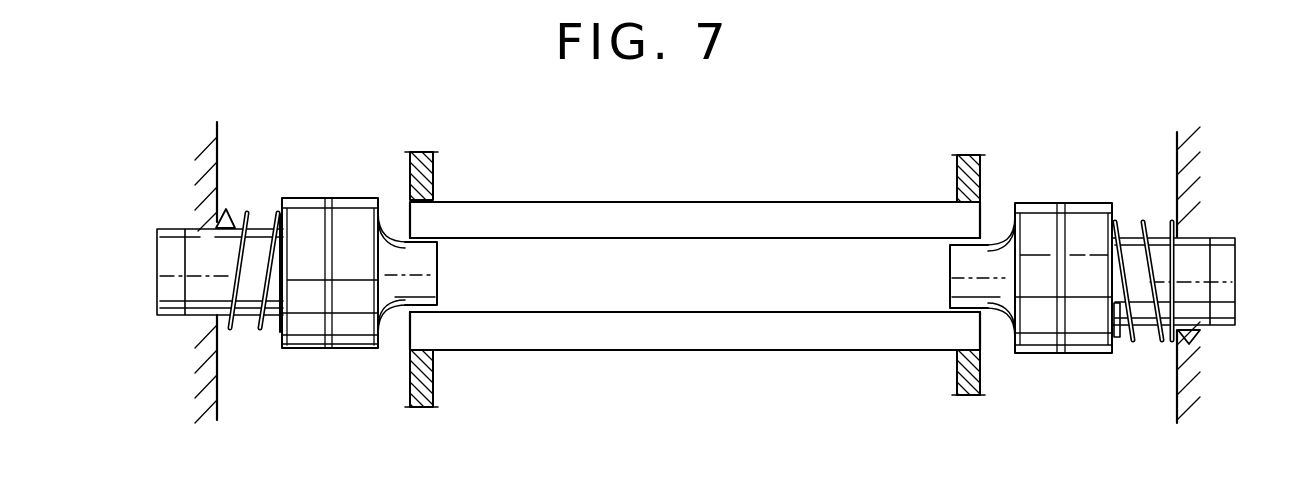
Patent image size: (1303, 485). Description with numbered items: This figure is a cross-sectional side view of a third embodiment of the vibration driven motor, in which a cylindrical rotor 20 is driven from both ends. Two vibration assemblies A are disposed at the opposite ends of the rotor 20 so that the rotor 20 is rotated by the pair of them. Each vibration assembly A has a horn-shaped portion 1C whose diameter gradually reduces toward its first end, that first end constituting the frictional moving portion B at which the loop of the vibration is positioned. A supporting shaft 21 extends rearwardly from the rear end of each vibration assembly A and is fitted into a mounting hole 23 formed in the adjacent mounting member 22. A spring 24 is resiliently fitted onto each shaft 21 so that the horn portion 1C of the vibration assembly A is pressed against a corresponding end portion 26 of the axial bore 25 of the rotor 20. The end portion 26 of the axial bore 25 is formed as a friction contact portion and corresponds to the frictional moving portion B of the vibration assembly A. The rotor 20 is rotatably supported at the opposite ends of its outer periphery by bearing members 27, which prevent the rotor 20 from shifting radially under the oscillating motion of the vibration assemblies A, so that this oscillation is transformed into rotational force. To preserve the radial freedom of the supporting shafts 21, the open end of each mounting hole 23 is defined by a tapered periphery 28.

The horn-shaped portion 1C is at (996, 320).
The cylindrical rotor 20 is at (623, 340).
The supporting shaft 21 is at (245, 325).
The mounting member 22 is at (164, 154).
The mounting hole 23 is at (161, 318).
The spring 24 is at (266, 320).
The axial bore 25 is at (755, 305).
The end portion of the axial bore 26 is at (448, 306).
The bearing member 27 is at (410, 380).
The tapered periphery 28 is at (232, 216).
The vibration assembly A is at (330, 193).
The frictional moving portion B is at (402, 232).